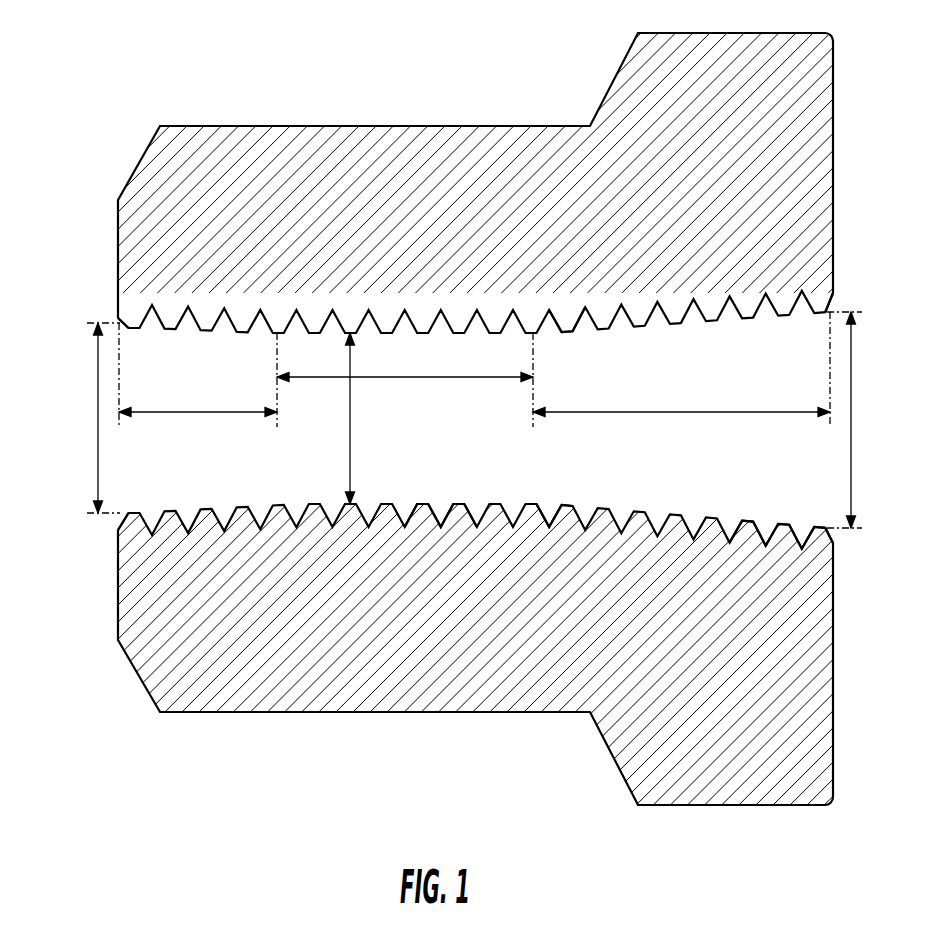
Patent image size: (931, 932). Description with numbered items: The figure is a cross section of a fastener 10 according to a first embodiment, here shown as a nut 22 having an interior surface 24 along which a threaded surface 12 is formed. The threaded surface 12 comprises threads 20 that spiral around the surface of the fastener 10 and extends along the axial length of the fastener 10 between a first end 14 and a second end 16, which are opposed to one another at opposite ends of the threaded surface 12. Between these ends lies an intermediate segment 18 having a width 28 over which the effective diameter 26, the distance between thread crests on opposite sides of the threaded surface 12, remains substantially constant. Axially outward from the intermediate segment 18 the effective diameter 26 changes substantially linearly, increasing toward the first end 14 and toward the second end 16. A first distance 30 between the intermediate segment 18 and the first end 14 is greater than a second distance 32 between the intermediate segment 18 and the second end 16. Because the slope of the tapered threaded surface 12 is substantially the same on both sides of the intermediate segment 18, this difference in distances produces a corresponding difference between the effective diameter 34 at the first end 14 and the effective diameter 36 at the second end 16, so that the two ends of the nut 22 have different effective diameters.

The fastener 10 is at (97, 122).
The threaded surface 12 is at (763, 520).
The first end 14 is at (831, 295).
The second end 16 is at (120, 316).
The intermediate segment 18 is at (432, 492).
The threads 20 is at (327, 513).
The nut 22 is at (240, 712).
The interior surface 24 is at (552, 502).
The effective diameter 26 is at (352, 432).
The width 28 is at (425, 378).
The first distance 30 is at (665, 411).
The second distance 32 is at (191, 412).
The effective diameter at the first end 34 is at (853, 390).
The effective diameter at the second end 36 is at (97, 437).